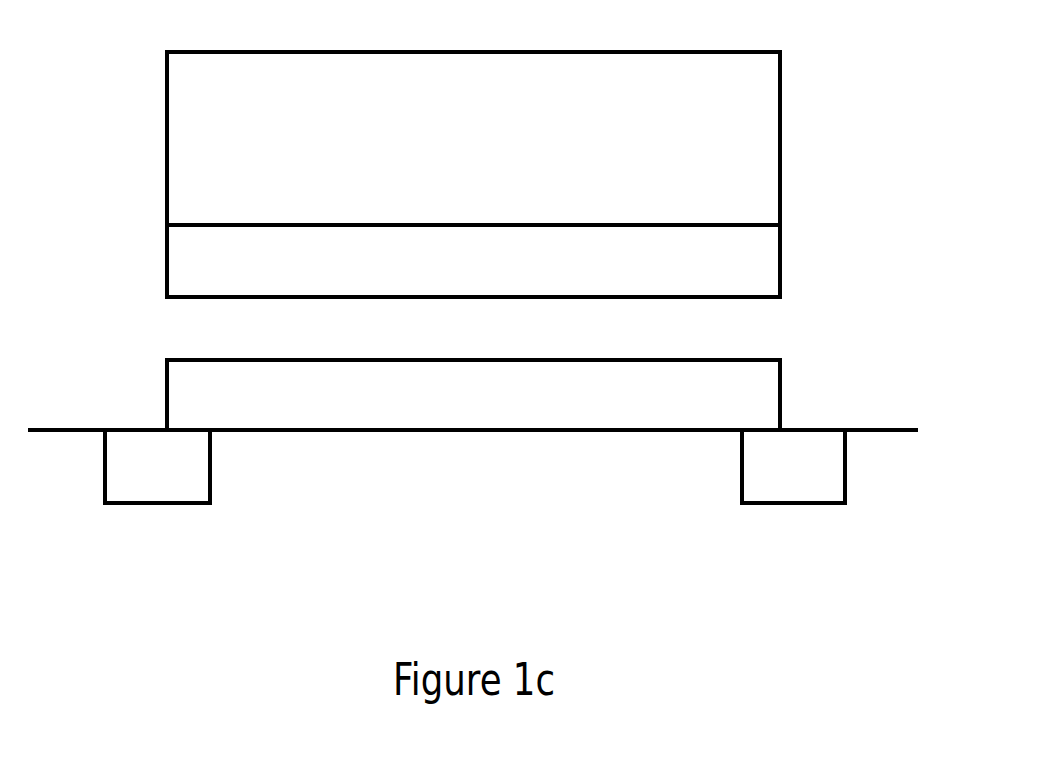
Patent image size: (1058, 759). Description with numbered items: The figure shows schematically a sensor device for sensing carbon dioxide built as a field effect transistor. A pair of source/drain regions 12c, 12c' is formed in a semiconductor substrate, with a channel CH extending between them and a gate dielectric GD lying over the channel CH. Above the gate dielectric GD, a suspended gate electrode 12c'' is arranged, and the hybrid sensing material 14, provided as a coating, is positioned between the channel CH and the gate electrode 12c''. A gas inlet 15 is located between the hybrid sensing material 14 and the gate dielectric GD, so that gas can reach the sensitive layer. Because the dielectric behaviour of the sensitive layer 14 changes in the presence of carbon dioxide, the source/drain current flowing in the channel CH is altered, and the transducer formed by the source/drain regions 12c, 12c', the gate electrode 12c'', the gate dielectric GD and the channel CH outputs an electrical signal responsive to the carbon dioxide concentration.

The source/drain region 12c is at (157, 518).
The source/drain region 12c' is at (793, 518).
The suspended gate electrode 12c'' is at (534, 138).
The hybrid sensing material 14 is at (780, 258).
The gas inlet 15 is at (760, 330).
The gate dielectric GD is at (780, 392).
The channel CH is at (475, 482).